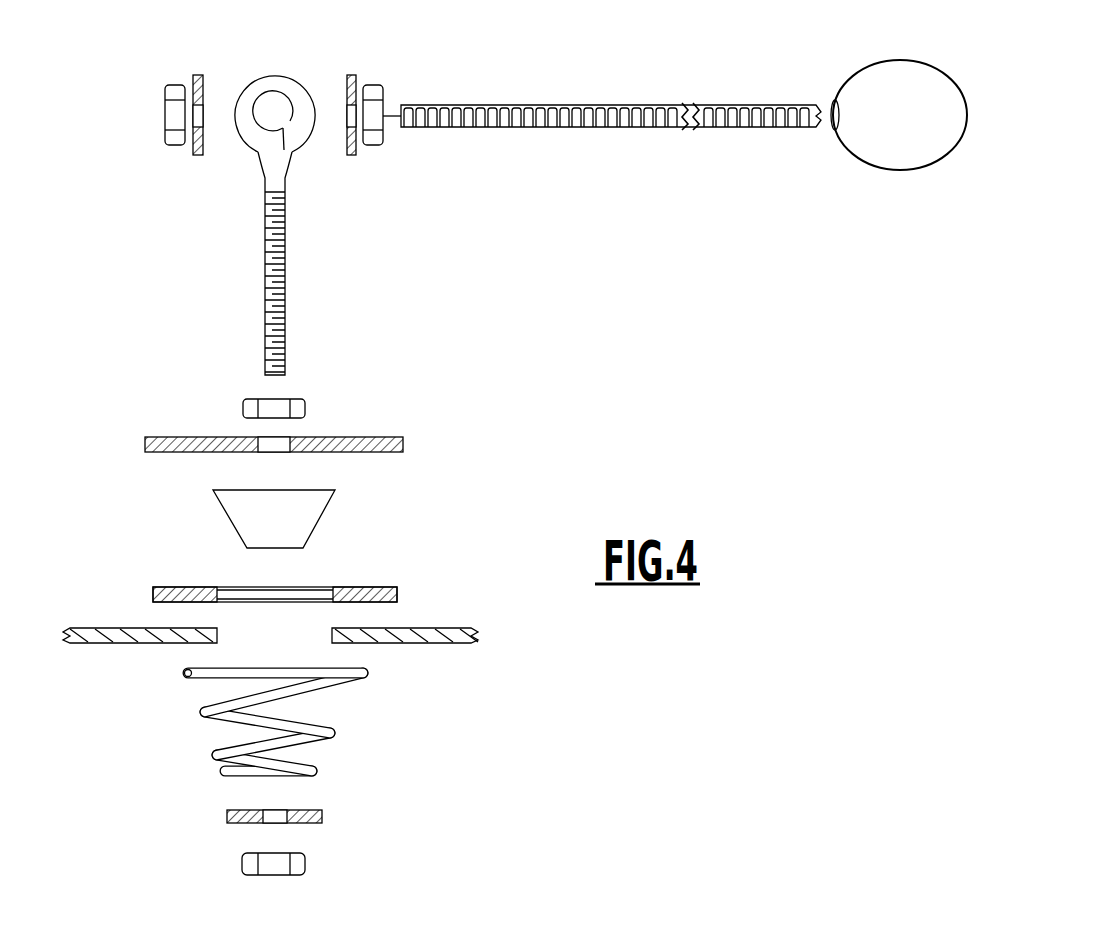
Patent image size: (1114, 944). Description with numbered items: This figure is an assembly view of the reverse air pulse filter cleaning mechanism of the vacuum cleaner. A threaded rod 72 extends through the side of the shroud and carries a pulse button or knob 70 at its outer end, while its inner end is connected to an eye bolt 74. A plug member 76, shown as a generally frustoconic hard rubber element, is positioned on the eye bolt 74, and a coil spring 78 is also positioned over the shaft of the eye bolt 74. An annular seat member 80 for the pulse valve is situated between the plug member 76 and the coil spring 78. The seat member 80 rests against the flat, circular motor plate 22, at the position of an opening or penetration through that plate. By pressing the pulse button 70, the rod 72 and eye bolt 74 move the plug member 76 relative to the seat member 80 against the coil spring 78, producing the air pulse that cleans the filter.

The pulse button 70 is at (972, 83).
The threaded rod 72 is at (562, 105).
The eye bolt 74 is at (285, 262).
The plug member 76 is at (323, 512).
The coil spring 78 is at (342, 732).
The annular seat member 80 is at (397, 587).
The motor plate 22 is at (90, 628).